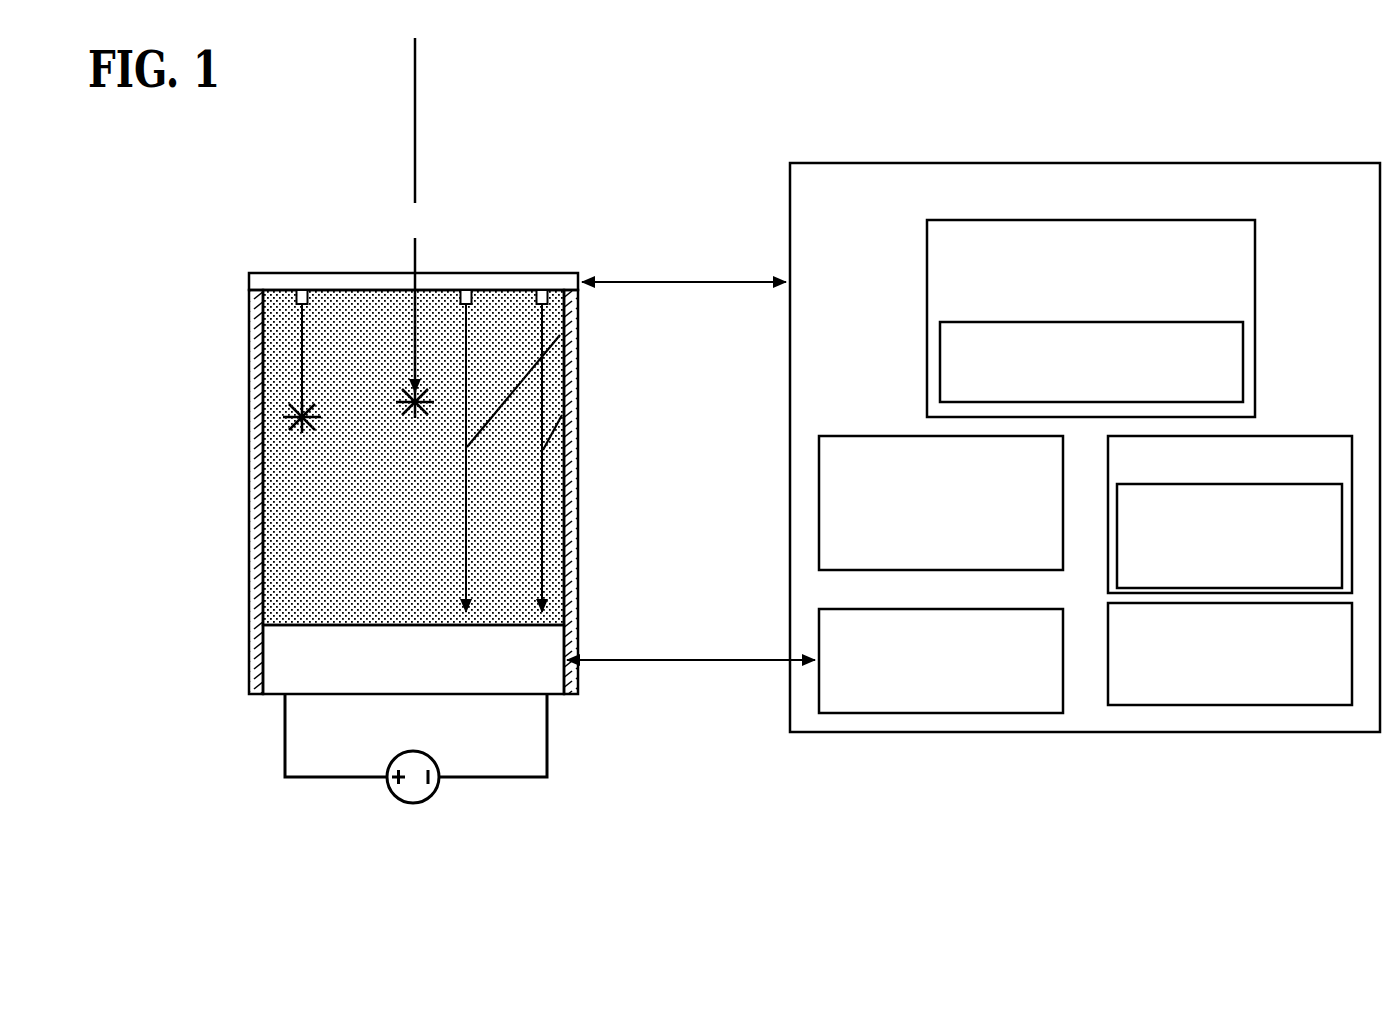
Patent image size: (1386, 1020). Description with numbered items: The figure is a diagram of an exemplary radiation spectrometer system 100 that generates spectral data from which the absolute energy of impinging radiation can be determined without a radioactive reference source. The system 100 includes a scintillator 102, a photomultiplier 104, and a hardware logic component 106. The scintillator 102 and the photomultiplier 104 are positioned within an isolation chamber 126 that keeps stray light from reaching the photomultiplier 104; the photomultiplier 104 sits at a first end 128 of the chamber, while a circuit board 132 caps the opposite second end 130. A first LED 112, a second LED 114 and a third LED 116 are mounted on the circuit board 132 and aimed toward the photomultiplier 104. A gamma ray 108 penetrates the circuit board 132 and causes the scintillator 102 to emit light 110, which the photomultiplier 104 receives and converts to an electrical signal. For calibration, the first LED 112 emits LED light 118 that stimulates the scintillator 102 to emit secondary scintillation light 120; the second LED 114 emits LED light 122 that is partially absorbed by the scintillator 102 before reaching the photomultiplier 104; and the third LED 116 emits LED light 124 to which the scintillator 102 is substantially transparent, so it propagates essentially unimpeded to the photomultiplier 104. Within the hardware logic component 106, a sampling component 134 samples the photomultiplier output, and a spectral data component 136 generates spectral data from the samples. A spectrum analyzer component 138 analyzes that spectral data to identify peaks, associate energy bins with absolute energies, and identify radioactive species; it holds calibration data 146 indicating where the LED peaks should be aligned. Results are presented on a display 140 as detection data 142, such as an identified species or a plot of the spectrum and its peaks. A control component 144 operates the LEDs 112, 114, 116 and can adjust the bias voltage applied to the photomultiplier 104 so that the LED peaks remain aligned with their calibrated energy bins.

The radiation spectrometer system 100 is at (1282, 84).
The scintillator 102 is at (286, 492).
The photomultiplier 104 is at (413, 659).
The hardware logic component 106 is at (1076, 163).
The gamma ray 108 is at (417, 135).
The light 110 is at (410, 382).
The first LED 112 is at (300, 290).
The second LED 114 is at (468, 290).
The third LED 116 is at (544, 290).
The LED light 118 is at (301, 368).
The secondary scintillation light 120 is at (288, 413).
The LED light 122 is at (560, 335).
The LED light 124 is at (562, 415).
The isolation chamber 126 is at (256, 525).
The first end 128 is at (567, 722).
The second end 130 is at (471, 226).
The circuit board 132 is at (249, 276).
The sampling component 134 is at (941, 661).
The spectral data component 136 is at (941, 503).
The spectrum analyzer component 138 is at (1091, 318).
The display 140 is at (1268, 436).
The detection data 142 is at (1229, 536).
The control component 144 is at (1230, 654).
The calibration data 146 is at (1091, 362).